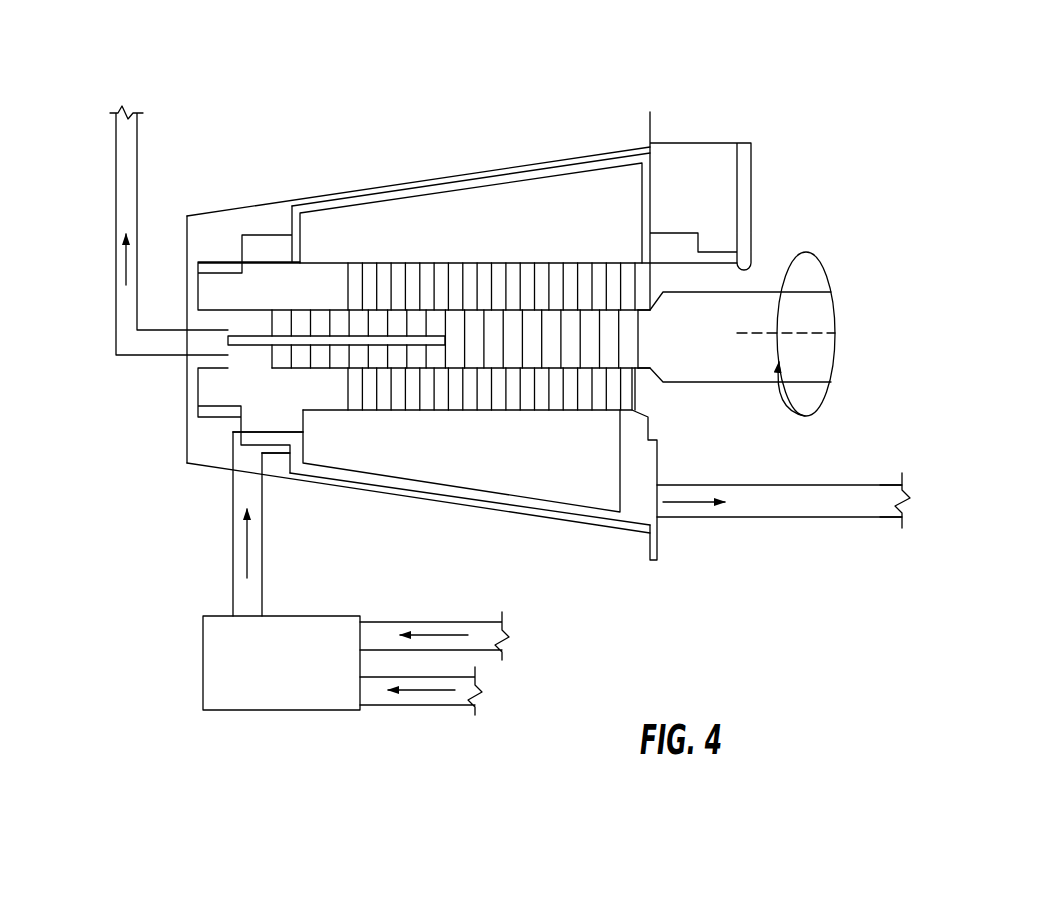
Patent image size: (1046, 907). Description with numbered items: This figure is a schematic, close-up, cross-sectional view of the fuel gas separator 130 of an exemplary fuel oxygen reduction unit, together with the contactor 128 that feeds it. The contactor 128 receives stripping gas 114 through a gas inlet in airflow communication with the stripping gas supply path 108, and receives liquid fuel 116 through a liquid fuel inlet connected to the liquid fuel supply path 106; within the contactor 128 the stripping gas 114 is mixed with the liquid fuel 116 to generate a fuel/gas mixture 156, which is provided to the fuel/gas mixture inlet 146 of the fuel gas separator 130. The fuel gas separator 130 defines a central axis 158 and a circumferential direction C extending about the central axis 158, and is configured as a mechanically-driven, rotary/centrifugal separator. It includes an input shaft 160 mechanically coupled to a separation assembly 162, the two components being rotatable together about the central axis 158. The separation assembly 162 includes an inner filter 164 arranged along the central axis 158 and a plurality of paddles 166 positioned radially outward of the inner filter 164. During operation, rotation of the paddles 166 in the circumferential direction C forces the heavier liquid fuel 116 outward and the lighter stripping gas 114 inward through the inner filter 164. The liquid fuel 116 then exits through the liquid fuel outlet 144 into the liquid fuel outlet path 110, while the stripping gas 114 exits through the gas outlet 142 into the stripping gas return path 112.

The fuel gas separator 130 is at (458, 72).
The separation assembly 162 is at (600, 157).
The stripping gas return path 112 is at (134, 182).
The stripping gas 114 is at (124, 260).
The gas outlet 142 is at (186, 348).
The fuel/gas mixture inlet 146 is at (256, 483).
The fuel/gas mixture 156 is at (246, 543).
The paddles 166 is at (560, 236).
The inner filter 164 is at (564, 428).
The input shaft 160 is at (768, 312).
The central axis 158 is at (818, 333).
The circumferential direction C is at (833, 367).
The liquid fuel 116 is at (688, 504).
The liquid fuel supply path 106 is at (480, 618).
The stripping gas supply path 108 is at (448, 708).
The contactor 128 is at (250, 712).
The liquid fuel outlet 144 is at (764, 511).
The liquid fuel outlet path 110 is at (883, 513).